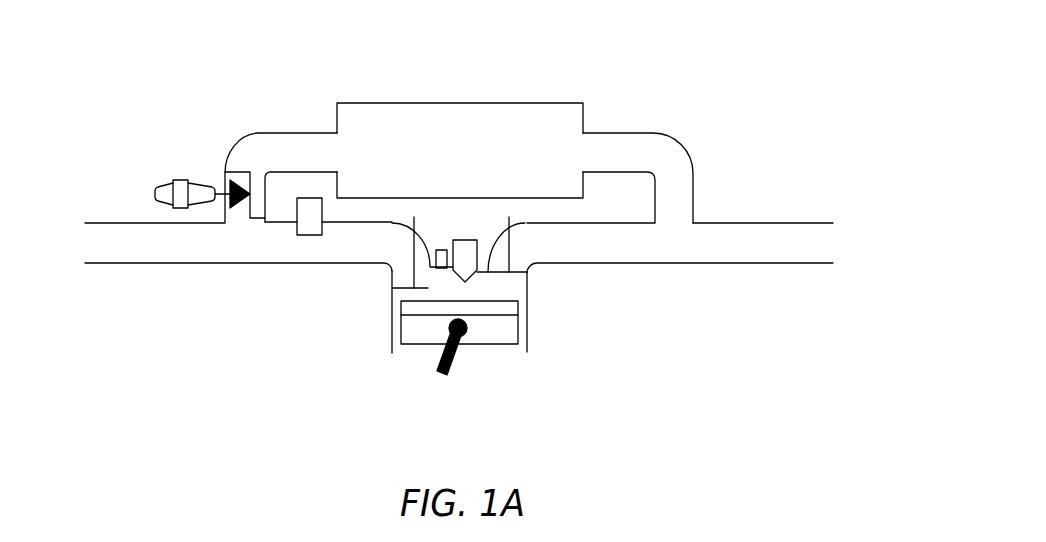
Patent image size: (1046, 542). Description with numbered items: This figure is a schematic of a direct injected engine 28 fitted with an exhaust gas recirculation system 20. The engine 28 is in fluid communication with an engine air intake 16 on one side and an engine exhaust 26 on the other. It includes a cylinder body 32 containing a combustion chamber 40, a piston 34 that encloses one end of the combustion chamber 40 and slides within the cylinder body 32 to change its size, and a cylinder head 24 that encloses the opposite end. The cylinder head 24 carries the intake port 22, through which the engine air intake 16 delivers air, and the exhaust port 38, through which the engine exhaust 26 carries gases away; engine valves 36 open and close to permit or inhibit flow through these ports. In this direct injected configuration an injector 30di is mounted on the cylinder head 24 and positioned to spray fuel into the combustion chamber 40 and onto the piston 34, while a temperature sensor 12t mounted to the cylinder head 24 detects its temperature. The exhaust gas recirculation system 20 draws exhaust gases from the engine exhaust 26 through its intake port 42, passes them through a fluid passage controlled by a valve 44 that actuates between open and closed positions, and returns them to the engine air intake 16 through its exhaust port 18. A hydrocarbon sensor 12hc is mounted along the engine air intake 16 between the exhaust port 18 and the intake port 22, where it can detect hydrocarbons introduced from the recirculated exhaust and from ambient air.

The engine air intake 16 is at (117, 237).
The valve 44 is at (178, 180).
The exhaust port 18 is at (237, 212).
The hydrocarbon sensor 12hc is at (310, 227).
The exhaust gas recirculation system 20 is at (345, 103).
The intake port 42 is at (673, 225).
The engine exhaust 26 is at (673, 245).
The intake port 22 is at (402, 263).
The exhaust port 38 is at (519, 262).
The temperature sensor 12t is at (440, 247).
The injector 30di is at (467, 243).
The engine valves 36 is at (400, 290).
The cylinder body 32 is at (389, 343).
The engine 28 is at (378, 333).
The piston 34 is at (507, 335).
The cylinder head 24 is at (487, 330).
The combustion chamber 40 is at (443, 288).